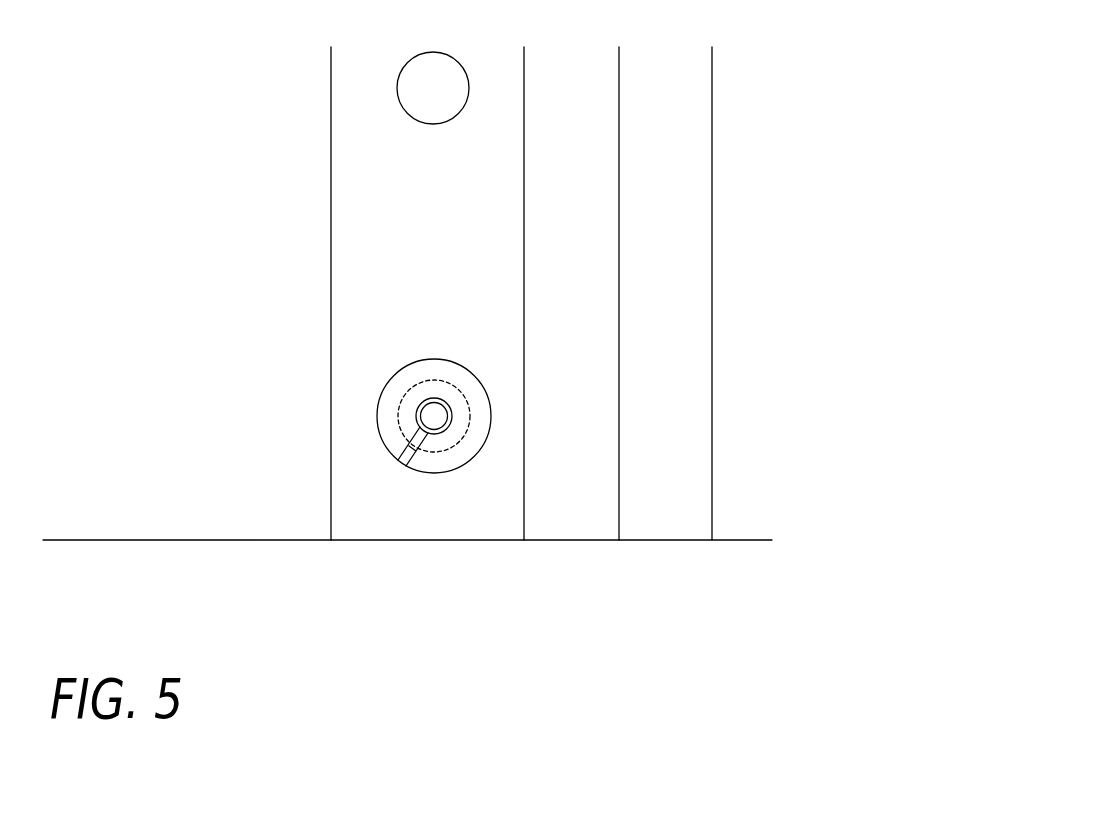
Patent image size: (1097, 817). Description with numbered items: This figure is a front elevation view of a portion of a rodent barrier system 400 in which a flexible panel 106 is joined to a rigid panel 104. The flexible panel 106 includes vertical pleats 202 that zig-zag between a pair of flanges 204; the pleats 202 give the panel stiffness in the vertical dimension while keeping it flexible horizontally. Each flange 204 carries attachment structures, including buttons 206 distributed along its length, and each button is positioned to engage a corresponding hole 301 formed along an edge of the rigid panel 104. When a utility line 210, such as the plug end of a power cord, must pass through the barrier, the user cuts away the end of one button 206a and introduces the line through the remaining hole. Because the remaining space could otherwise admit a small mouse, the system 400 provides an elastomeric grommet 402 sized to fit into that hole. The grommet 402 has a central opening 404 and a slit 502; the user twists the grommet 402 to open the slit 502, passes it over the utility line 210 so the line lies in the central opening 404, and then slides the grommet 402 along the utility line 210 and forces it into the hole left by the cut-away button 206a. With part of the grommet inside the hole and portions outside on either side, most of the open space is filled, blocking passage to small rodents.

The rigid panel 104 is at (202, 540).
The flexible panel 106 is at (658, 540).
The vertical pleat 202 is at (698, 288).
The flange 204 is at (439, 540).
The button 206 is at (436, 124).
The button 206a is at (459, 361).
The hole 301 is at (432, 380).
The rodent barrier system 400 is at (822, 110).
The grommet 402 is at (378, 397).
The central opening 404 is at (422, 398).
The utility line 210 is at (438, 420).
The slit 502 is at (403, 467).